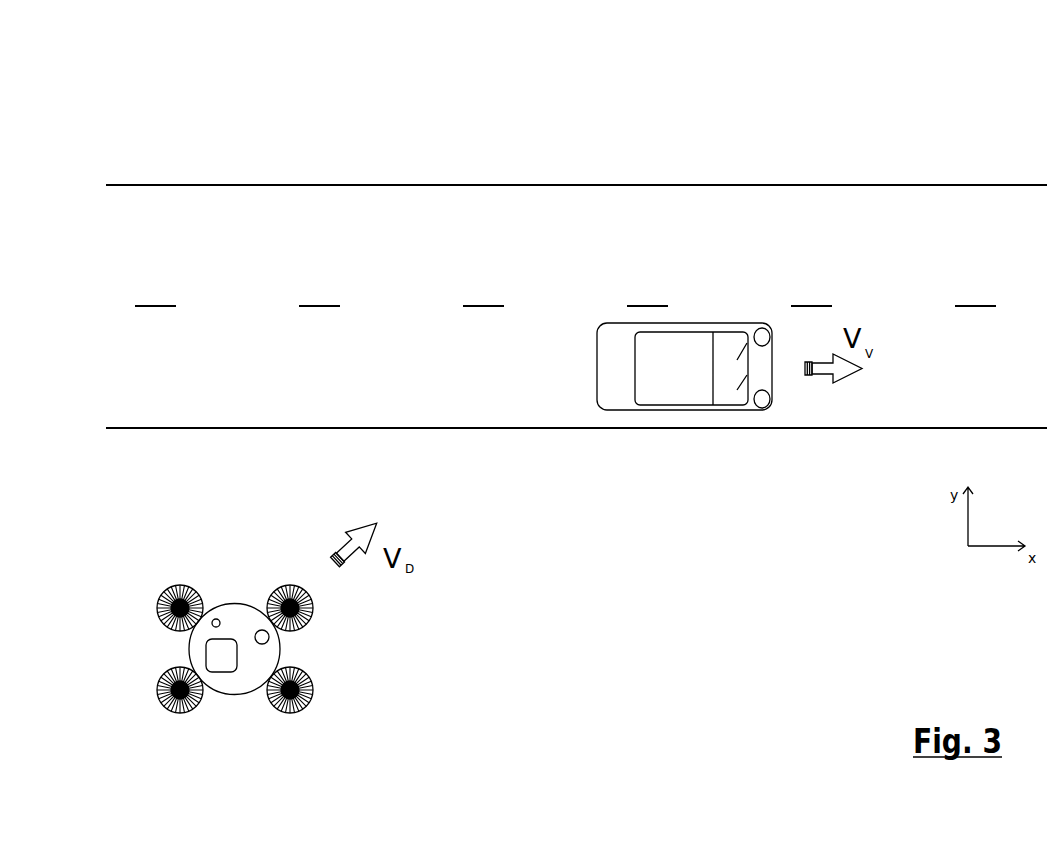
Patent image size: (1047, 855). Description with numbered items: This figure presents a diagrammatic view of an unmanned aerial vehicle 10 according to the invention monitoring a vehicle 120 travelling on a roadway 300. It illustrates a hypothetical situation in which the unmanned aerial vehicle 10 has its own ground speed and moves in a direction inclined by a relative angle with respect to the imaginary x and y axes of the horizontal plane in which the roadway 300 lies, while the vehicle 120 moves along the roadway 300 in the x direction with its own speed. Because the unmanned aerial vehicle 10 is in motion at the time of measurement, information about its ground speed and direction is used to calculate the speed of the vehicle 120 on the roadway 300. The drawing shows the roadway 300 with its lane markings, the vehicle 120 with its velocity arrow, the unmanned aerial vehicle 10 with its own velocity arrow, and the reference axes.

The roadway 300 is at (222, 218).
The vehicle 120 is at (687, 387).
The unmanned aerial vehicle 10 is at (166, 590).